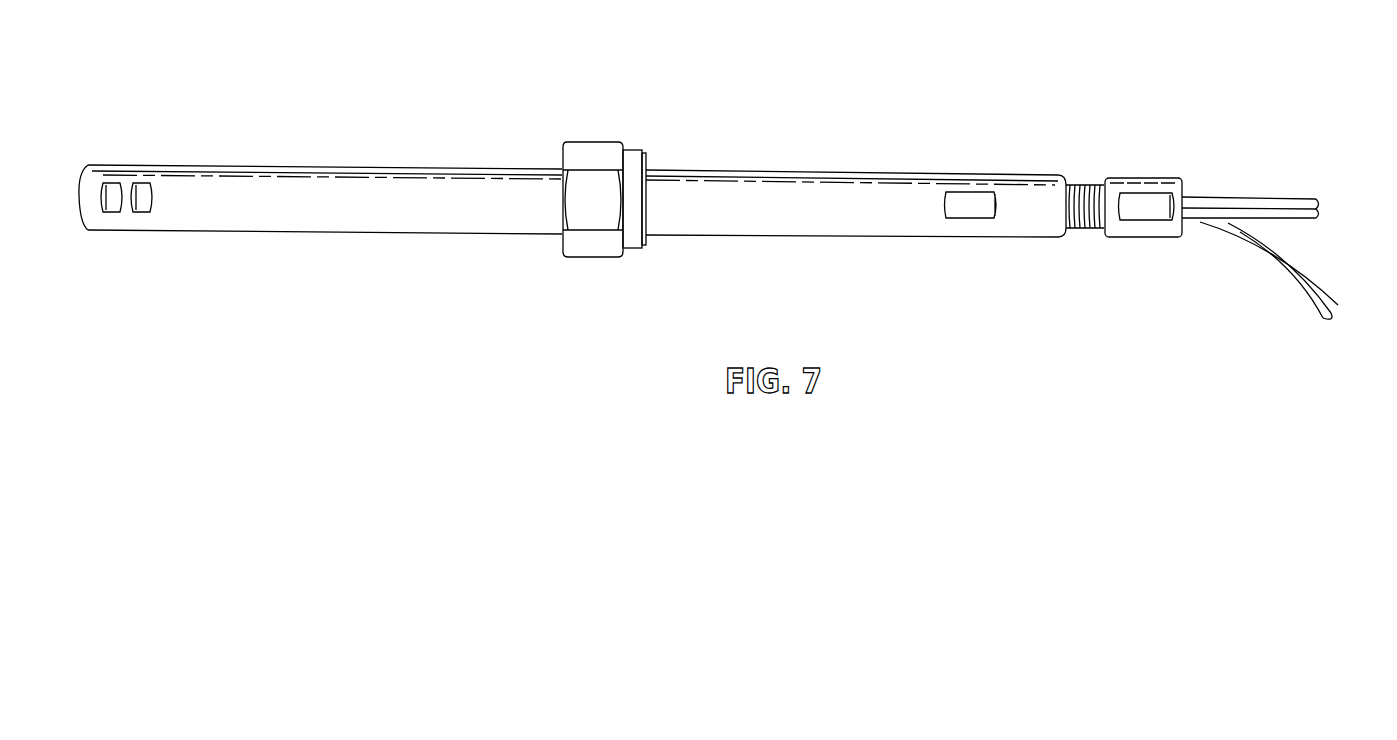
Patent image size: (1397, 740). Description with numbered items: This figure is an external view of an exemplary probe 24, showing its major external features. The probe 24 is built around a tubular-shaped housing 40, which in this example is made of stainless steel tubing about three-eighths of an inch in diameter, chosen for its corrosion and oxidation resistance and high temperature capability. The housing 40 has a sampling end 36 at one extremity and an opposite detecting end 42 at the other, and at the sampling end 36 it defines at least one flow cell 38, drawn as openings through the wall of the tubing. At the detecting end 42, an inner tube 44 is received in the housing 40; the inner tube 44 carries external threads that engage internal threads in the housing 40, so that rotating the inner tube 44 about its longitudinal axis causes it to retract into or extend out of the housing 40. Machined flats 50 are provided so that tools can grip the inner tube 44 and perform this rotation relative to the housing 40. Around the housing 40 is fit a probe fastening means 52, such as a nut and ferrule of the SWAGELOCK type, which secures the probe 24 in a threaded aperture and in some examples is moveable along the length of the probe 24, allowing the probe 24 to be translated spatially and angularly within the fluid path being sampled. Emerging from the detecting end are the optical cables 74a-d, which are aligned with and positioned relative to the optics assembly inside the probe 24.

The probe 24 is at (720, 217).
The sampling end 36 is at (79, 197).
The flow cell 38 is at (138, 193).
The housing 40 is at (325, 215).
The detecting end 42 is at (1063, 175).
The inner tube 44 is at (1153, 238).
The machined flats 50 is at (975, 218).
The probe fastening means 52 is at (583, 141).
The optical cables 74a-d is at (1313, 268).